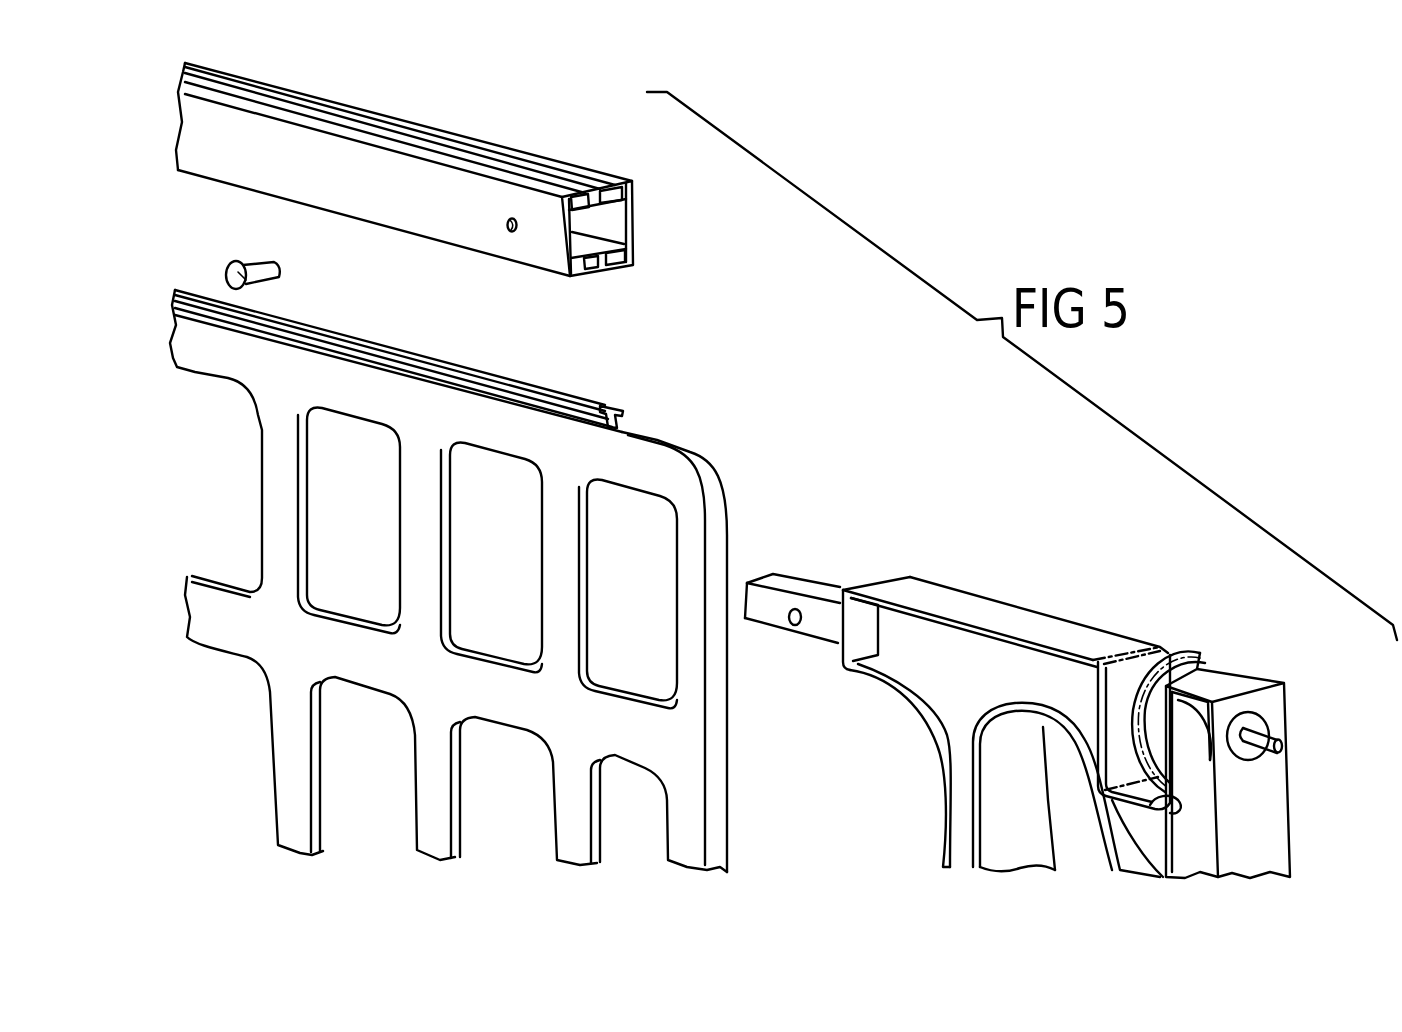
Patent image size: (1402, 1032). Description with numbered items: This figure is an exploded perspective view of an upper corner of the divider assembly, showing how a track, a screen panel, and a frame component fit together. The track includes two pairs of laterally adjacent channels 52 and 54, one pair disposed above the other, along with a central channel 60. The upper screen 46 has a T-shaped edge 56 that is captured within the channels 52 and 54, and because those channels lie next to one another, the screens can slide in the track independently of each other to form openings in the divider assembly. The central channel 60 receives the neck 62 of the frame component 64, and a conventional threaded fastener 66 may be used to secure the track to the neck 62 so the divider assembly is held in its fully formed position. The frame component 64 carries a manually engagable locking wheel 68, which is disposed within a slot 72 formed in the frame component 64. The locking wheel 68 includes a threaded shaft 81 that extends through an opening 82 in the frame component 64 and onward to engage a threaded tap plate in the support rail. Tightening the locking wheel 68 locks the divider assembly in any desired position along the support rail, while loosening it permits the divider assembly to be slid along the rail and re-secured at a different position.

The upper screen 46 is at (278, 507).
The channel 52 is at (608, 190).
The channel 54 is at (583, 197).
The T-shaped edge 56 is at (603, 410).
The central channel 60 is at (612, 218).
The neck 62 is at (802, 582).
The frame component 64 is at (1066, 620).
The threaded fastener 66 is at (245, 288).
The locking wheel 68 is at (1200, 653).
The slot 72 is at (1178, 805).
The threaded shaft 81 is at (1280, 746).
The opening 82 is at (1257, 713).